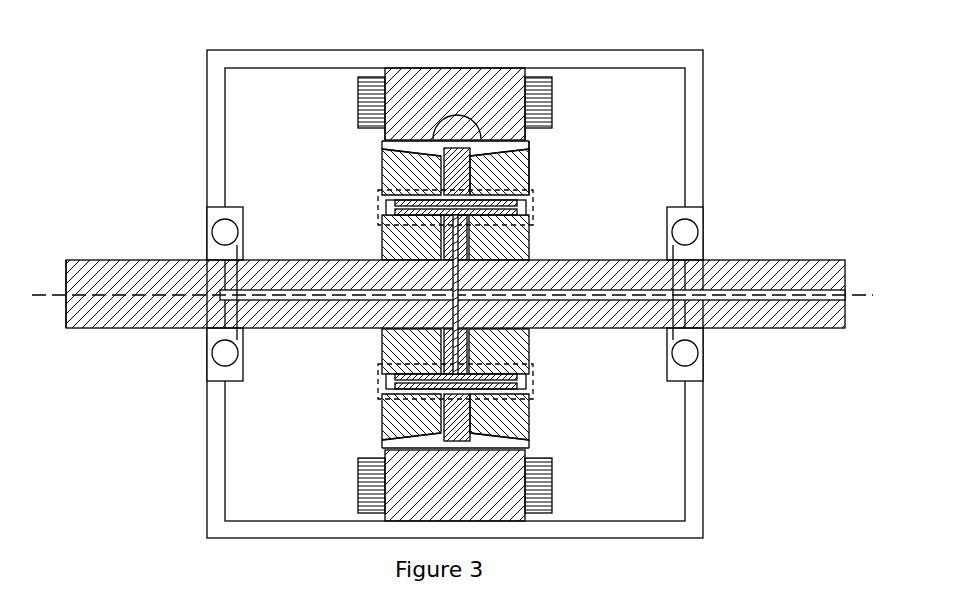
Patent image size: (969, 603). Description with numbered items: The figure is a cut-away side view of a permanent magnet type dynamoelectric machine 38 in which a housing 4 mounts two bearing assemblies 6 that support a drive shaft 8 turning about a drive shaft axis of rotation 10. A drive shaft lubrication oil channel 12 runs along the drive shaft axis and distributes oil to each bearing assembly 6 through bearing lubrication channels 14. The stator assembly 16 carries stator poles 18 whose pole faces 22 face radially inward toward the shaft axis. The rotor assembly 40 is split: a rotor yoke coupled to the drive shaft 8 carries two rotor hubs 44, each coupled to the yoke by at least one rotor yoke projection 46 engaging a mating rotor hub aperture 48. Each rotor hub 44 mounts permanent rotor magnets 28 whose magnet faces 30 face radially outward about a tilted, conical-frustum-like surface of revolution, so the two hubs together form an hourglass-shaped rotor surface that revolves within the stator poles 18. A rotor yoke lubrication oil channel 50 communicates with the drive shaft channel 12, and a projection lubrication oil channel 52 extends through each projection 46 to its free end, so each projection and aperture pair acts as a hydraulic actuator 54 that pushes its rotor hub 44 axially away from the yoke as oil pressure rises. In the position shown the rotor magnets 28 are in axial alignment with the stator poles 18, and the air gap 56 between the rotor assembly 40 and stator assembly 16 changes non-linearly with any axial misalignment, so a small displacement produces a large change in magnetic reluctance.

The housing 4 is at (652, 68).
The bearing assembly 6 is at (206, 215).
The drive shaft 8 is at (776, 260).
The drive shaft axis of rotation 10 is at (48, 295).
The drive shaft lubrication oil channel 12 is at (848, 292).
The bearing lubrication channel 14 is at (243, 250).
The stator assembly 16 is at (384, 66).
The stator pole 18 is at (527, 70).
The pole face 22 is at (440, 153).
The permanent rotor magnet 28 is at (528, 146).
The magnet face 30 is at (457, 122).
The dynamoelectric machine 38 is at (134, 117).
The rotor assembly 40 is at (379, 409).
The rotor hub 44 is at (381, 255).
The rotor yoke projection 46 is at (380, 217).
The rotor hub aperture 48 is at (380, 194).
The rotor yoke lubrication oil channel 50 is at (460, 262).
The projection lubrication oil channel 52 is at (470, 196).
The hydraulic actuator 54 is at (530, 160).
The air gap 56 is at (420, 139).